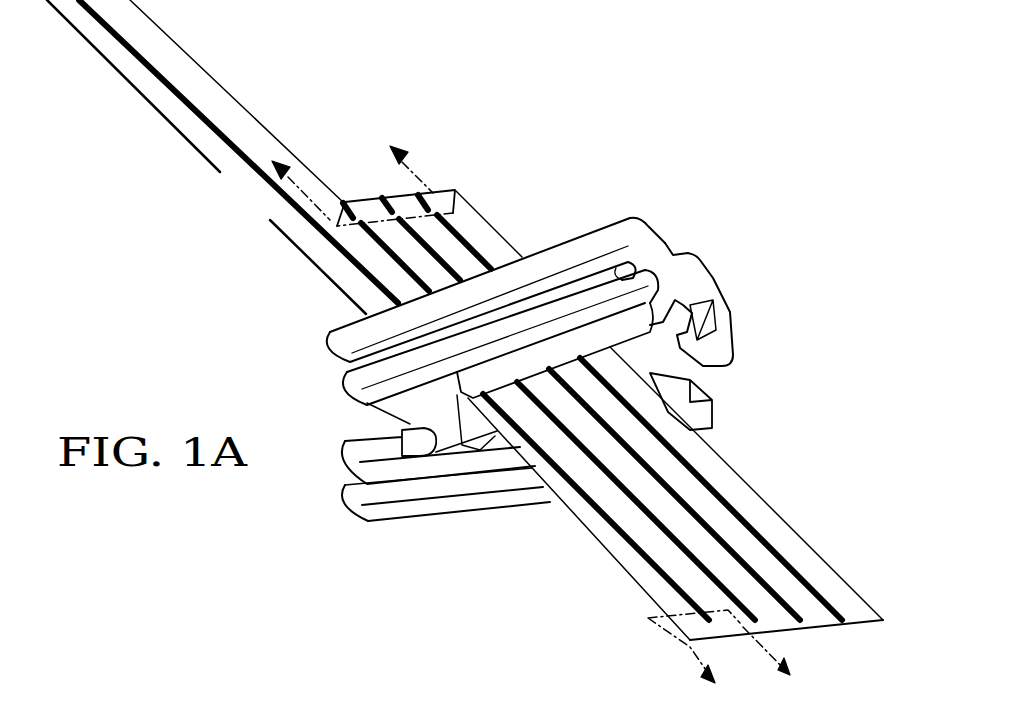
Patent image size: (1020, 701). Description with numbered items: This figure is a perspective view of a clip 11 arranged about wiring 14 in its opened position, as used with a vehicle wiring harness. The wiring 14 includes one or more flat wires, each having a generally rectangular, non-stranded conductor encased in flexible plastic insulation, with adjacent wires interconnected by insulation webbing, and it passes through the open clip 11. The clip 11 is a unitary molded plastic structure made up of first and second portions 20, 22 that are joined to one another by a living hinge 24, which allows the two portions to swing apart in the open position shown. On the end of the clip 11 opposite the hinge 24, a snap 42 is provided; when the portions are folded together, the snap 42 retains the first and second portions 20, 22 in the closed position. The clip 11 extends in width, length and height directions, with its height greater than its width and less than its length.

The clip 11 is at (727, 238).
The wiring 14 is at (762, 478).
The first portion 20 is at (515, 508).
The second portion 22 is at (630, 272).
The living hinge 24 is at (425, 432).
The snap 42 is at (733, 330).